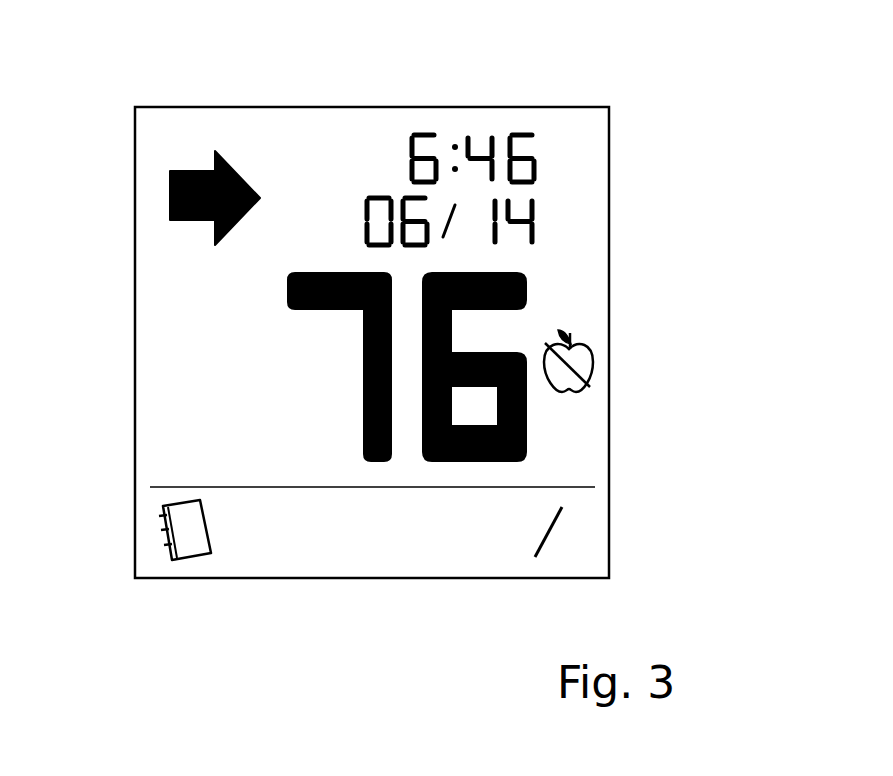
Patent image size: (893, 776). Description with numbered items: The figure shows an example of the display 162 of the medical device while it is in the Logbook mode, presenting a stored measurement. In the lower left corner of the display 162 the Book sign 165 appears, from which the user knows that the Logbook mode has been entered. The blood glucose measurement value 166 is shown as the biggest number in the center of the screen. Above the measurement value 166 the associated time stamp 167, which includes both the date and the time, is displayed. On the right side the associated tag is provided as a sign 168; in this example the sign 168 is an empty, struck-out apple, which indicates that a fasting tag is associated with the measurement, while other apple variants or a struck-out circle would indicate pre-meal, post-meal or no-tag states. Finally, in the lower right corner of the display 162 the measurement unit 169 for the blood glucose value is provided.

The display 162 is at (585, 216).
The Book sign 165 is at (180, 529).
The blood glucose measurement value 166 is at (527, 414).
The time stamp 167 is at (483, 147).
The sign 168 is at (585, 354).
The measurement unit 169 is at (585, 529).